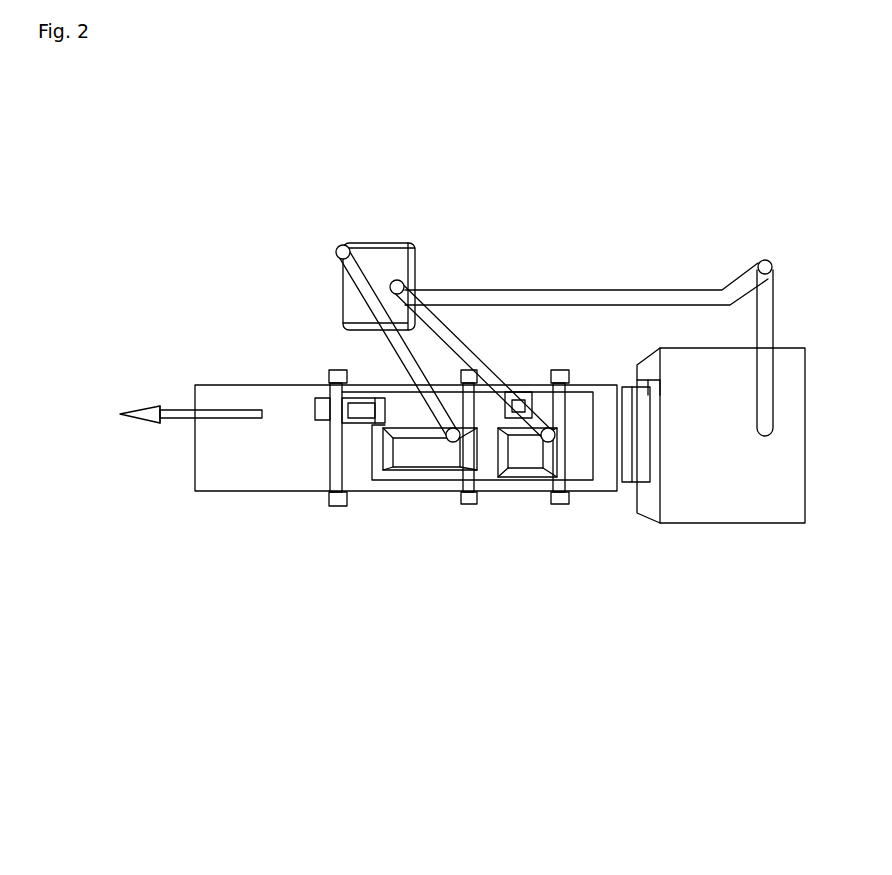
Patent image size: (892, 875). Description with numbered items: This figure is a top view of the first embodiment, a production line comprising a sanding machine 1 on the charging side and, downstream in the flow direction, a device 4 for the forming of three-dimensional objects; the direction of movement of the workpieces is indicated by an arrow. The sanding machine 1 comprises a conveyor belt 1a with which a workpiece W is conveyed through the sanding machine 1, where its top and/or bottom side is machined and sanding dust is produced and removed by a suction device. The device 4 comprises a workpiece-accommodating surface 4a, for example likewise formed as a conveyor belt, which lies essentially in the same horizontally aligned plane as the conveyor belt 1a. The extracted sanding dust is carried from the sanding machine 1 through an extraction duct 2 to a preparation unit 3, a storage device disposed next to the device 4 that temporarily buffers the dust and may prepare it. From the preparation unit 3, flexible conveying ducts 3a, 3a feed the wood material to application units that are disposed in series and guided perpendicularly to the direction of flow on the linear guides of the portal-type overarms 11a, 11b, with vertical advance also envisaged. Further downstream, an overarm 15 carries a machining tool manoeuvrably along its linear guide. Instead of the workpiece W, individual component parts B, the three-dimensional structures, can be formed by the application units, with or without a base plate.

The sanding machine 1 is at (760, 508).
The conveyor belt 1a is at (638, 460).
The extraction duct 2 is at (578, 290).
The preparation unit 3 is at (400, 260).
The conveying ducts 3a is at (395, 327).
The device for the forming of three-dimensional objects 4 is at (466, 653).
The workpiece-accommodating surface 4a is at (242, 457).
The overarm 11a is at (560, 503).
The overarm 11b is at (467, 503).
The overarm 15 is at (333, 503).
The three-dimensional structures B is at (392, 460).
The workpiece W is at (583, 457).